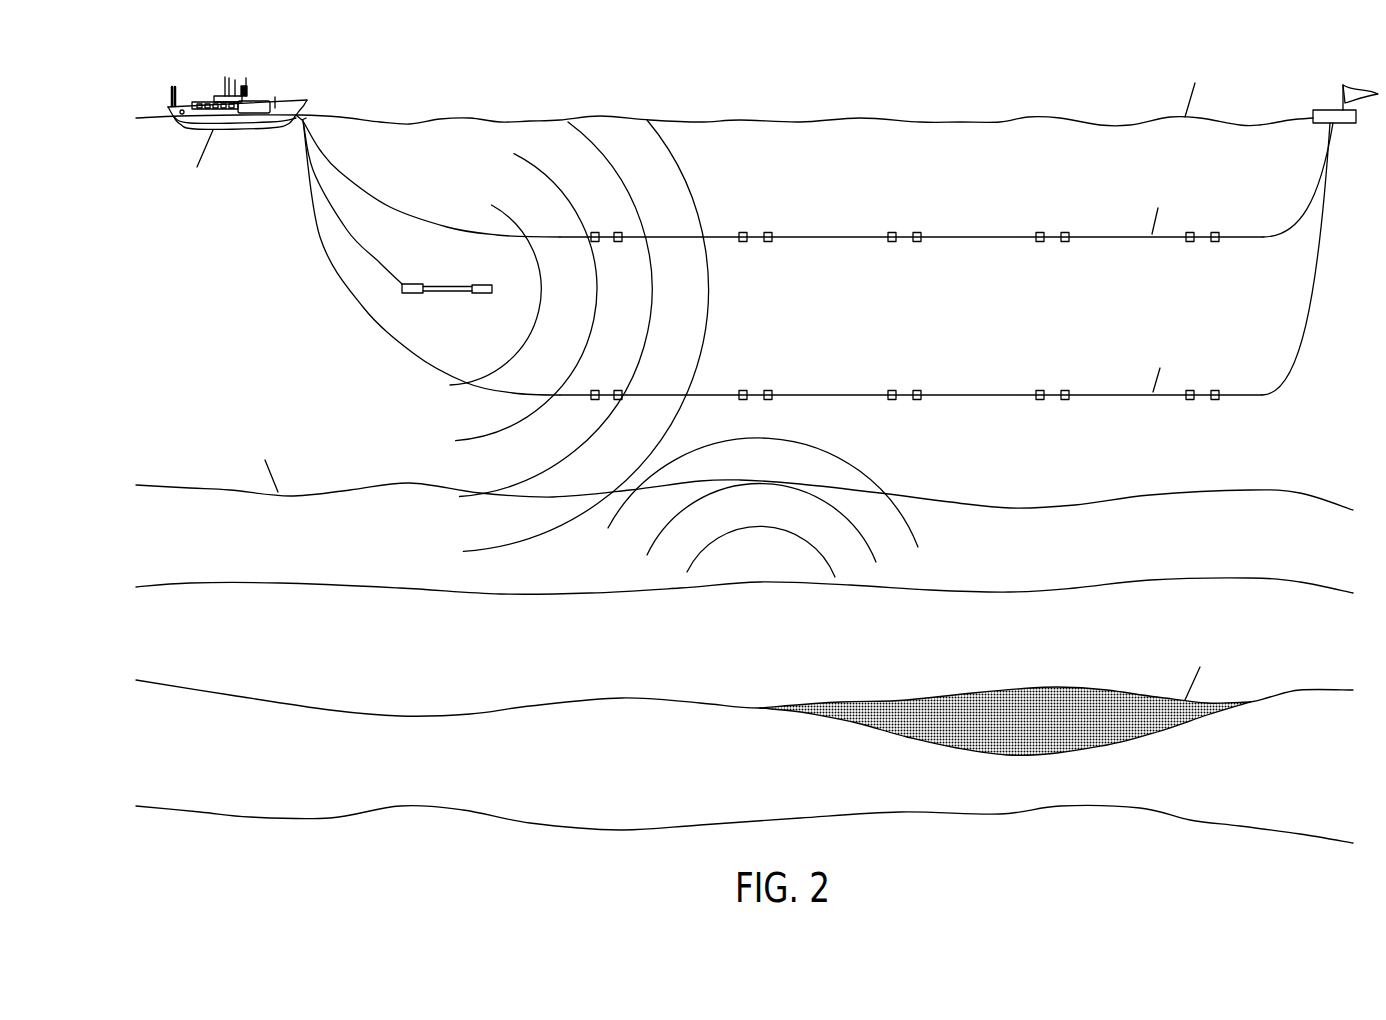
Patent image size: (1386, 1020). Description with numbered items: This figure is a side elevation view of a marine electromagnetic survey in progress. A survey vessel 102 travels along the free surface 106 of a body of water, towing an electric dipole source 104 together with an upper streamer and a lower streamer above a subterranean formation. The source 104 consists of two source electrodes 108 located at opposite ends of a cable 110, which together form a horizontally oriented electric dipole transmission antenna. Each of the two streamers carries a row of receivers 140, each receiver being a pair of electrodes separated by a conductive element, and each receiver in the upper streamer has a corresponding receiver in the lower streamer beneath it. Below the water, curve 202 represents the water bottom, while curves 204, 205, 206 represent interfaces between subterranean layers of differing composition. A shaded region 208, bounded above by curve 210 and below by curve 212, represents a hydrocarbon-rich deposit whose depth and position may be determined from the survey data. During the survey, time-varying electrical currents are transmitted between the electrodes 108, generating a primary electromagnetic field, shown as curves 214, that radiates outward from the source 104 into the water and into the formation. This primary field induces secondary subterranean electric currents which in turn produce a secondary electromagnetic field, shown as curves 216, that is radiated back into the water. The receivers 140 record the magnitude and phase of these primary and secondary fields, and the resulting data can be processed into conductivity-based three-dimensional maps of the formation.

The survey vessel 102 is at (257, 98).
The electric dipole source 104 is at (456, 326).
The free surface 106 is at (1028, 114).
The source electrodes 108 is at (410, 294).
The cable 110 is at (447, 294).
The receivers 140 is at (906, 264).
The water bottom 202 is at (1075, 505).
The interface between subterranean layers 204 is at (1075, 588).
The interface between subterranean layers 205 is at (622, 698).
The interface between subterranean layers 206 is at (620, 830).
The hydrocarbon-rich subterranean deposit 208 is at (1006, 698).
The top curve of deposit 210 is at (992, 692).
The bottom curve of deposit 212 is at (1158, 733).
The primary electromagnetic field 214 is at (727, 317).
The secondary electromagnetic field 216 is at (898, 490).